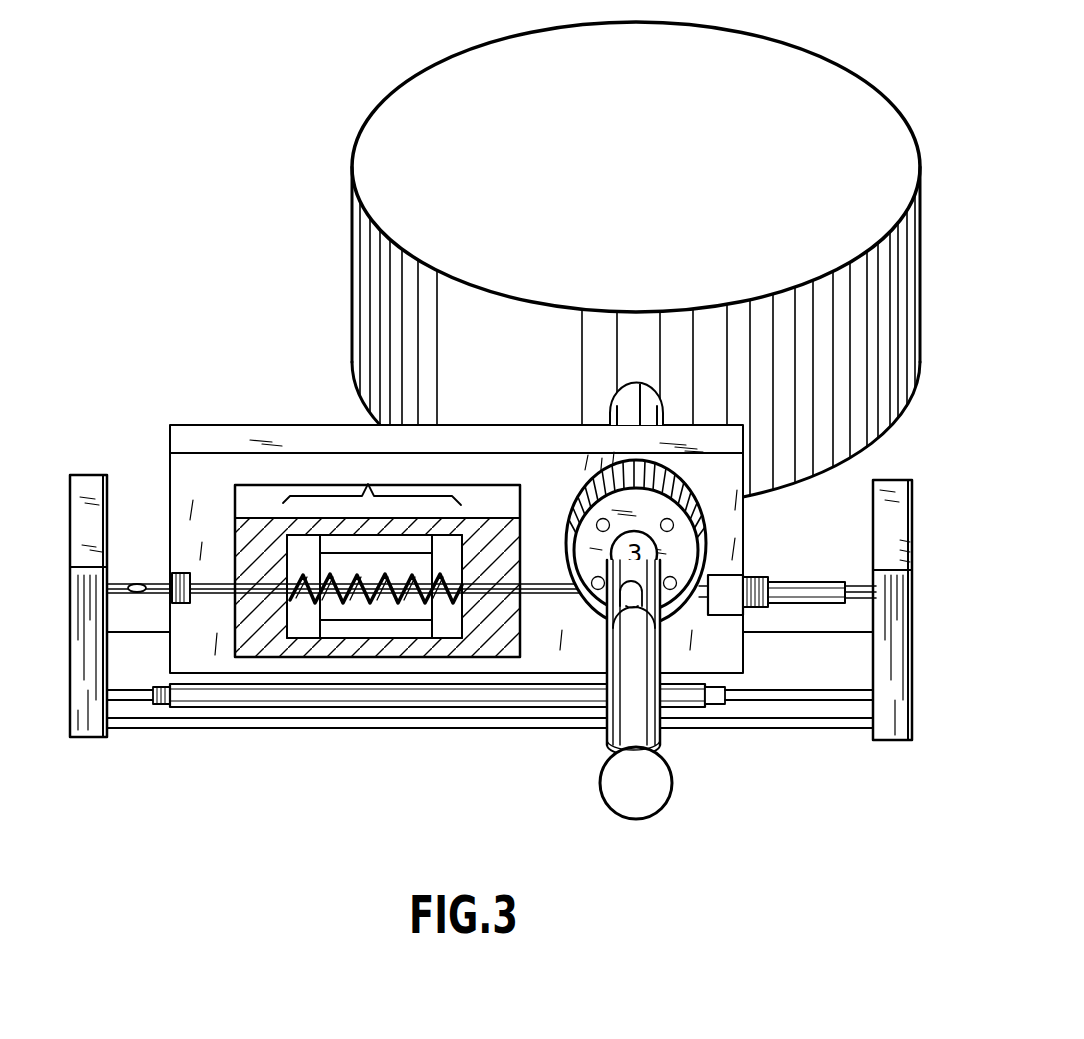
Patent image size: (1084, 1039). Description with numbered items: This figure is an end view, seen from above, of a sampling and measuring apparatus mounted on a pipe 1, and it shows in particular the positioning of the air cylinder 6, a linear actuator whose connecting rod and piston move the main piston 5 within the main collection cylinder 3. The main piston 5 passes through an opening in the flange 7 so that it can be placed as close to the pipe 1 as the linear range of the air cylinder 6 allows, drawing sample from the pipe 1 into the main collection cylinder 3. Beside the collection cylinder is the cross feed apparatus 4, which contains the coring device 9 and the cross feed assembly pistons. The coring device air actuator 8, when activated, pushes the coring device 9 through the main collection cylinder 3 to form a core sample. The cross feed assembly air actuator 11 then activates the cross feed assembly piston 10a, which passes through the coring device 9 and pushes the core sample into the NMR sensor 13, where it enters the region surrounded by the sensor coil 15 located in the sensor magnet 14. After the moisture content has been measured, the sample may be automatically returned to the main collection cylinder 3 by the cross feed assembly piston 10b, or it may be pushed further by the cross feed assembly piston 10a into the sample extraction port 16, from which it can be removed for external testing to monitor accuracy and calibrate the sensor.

The pipe 1 is at (353, 166).
The main collection cylinder 3 is at (645, 567).
The cross feed apparatus 4 is at (900, 681).
The main piston 5 is at (597, 606).
The air cylinder 6 is at (665, 737).
The flange 7 is at (690, 549).
The coring device air actuator 8 is at (800, 582).
The coring device 9 is at (643, 616).
The cross feed assembly piston 10a is at (857, 584).
The cross feed assembly piston 10b is at (216, 598).
The cross feed assembly air actuator 11 is at (583, 690).
The NMR sensor 13 is at (377, 558).
The sensor magnet 14 is at (345, 545).
The sensor coil 15 is at (455, 566).
The sample extraction port 16 is at (137, 583).